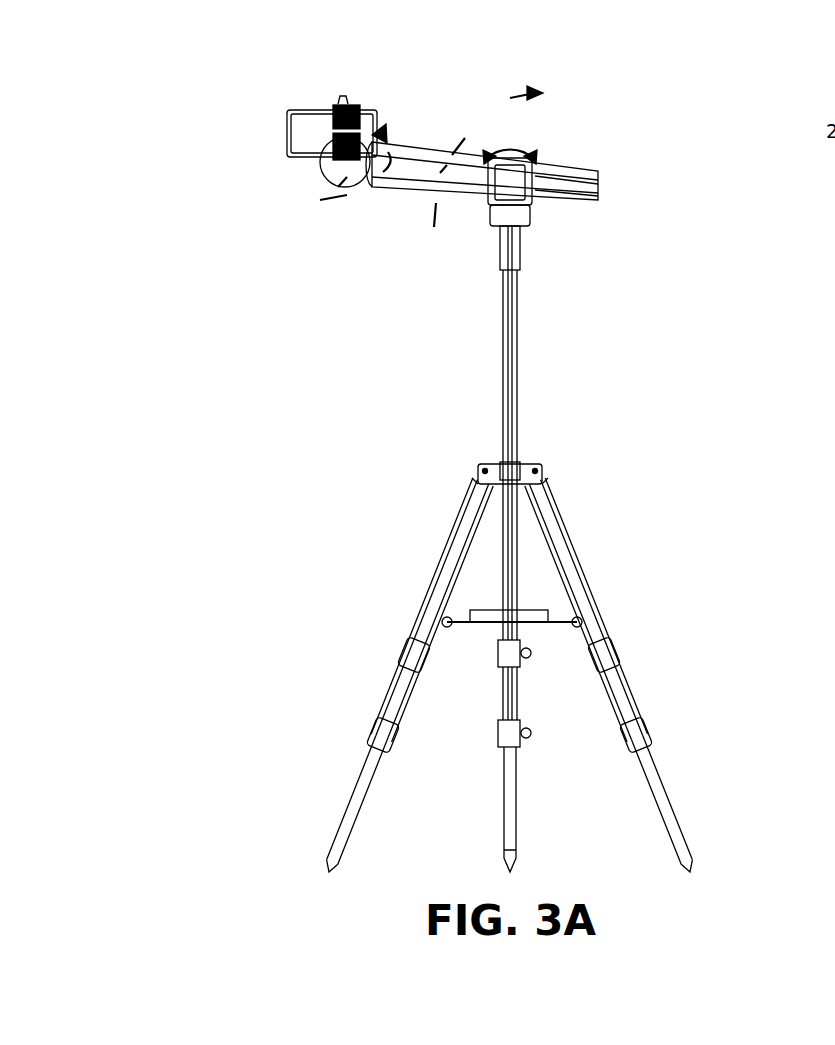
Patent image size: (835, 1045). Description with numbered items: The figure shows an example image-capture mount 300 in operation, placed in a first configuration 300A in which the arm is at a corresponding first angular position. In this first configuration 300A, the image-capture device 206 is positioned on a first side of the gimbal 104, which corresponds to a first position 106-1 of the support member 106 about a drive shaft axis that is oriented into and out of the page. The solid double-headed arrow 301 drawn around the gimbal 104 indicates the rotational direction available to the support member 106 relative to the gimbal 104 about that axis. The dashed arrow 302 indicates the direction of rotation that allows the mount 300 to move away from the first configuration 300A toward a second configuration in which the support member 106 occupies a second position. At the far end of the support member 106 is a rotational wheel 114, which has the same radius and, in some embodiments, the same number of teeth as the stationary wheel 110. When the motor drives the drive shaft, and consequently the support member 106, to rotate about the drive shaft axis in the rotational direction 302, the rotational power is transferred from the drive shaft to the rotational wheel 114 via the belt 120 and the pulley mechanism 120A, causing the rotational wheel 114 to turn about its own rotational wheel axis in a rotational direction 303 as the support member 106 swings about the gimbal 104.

The mount 300 is at (222, 172).
The first configuration 300A is at (730, 138).
The image-capture device 206 is at (305, 138).
The belt 120 is at (328, 110).
The pulley mechanism 120A is at (407, 137).
The dashed arrow 302 is at (493, 112).
The solid double-headed arrow 301 is at (515, 148).
The stationary wheel 110 is at (525, 148).
The rotational wheel 114 is at (332, 193).
The rotational direction 303 is at (377, 190).
The support member 106 is at (401, 238).
The first position 106-1 is at (430, 163).
The gimbal 104 is at (505, 180).